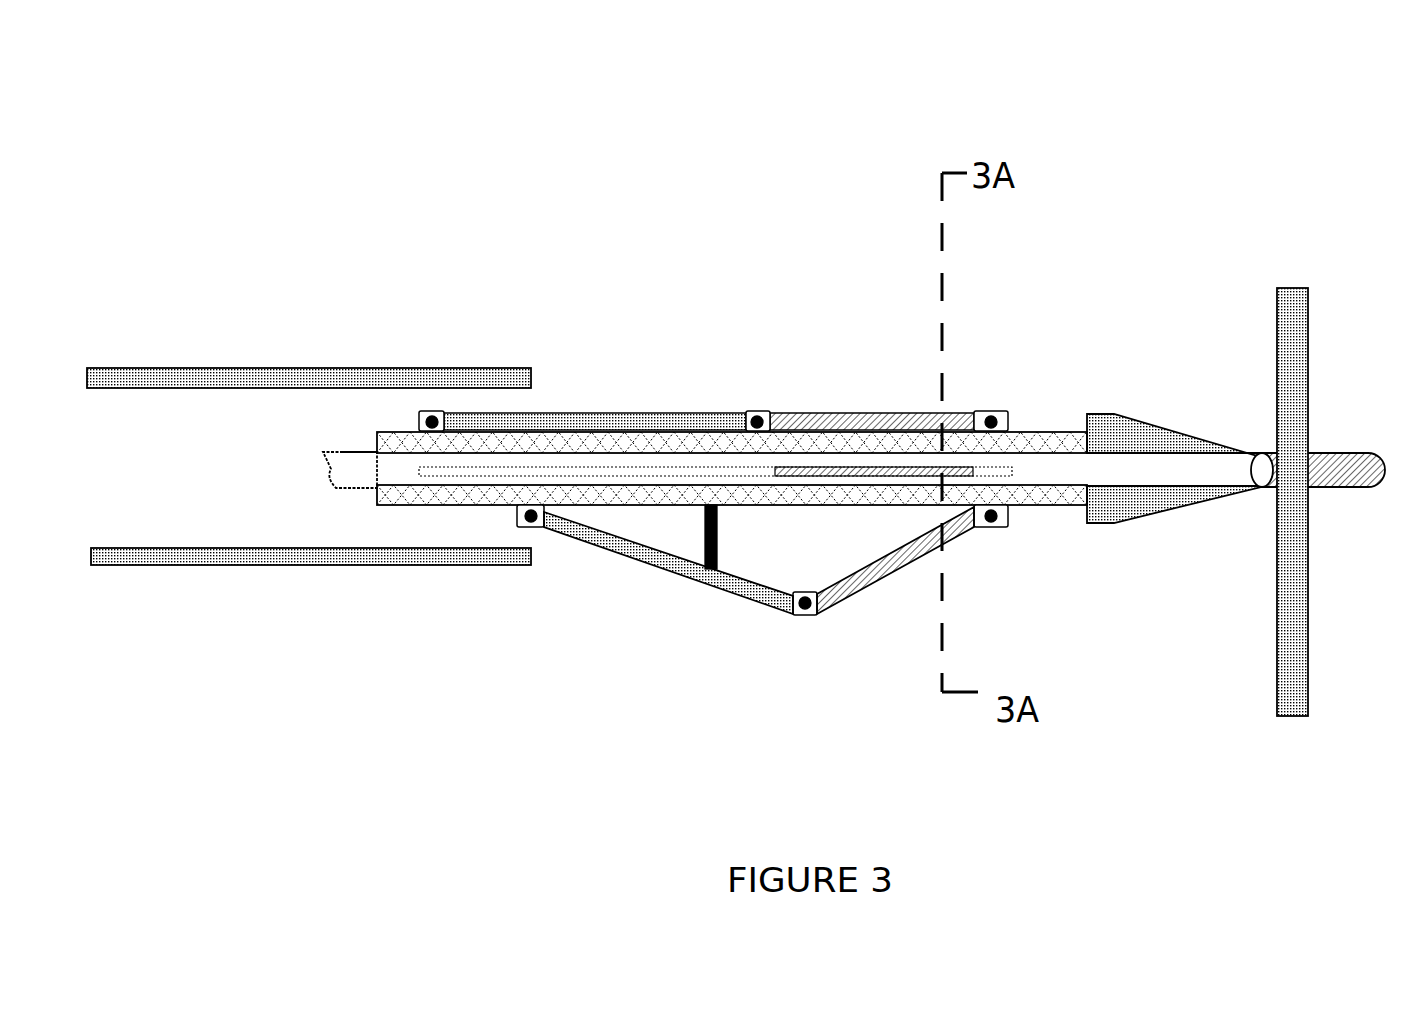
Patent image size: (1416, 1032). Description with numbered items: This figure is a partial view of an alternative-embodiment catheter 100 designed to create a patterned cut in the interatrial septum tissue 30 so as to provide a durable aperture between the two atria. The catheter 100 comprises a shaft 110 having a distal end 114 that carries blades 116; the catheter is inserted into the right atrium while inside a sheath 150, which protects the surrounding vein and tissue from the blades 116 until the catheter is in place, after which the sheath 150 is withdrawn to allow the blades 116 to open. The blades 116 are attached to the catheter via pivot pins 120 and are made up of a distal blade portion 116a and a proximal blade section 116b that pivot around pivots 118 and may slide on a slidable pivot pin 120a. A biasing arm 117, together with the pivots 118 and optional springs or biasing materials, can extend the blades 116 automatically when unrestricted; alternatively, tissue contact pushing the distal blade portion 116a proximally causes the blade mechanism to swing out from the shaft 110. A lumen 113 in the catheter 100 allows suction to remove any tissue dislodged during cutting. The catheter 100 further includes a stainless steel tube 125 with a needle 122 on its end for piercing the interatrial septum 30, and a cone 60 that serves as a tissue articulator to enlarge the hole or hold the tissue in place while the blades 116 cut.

The catheter 100 is at (594, 291).
The sheath 150 is at (220, 377).
The lumen 113 is at (350, 465).
The stainless steel tube 125 is at (355, 453).
The shaft 110 is at (393, 443).
The blades 116 is at (858, 420).
The pivots 118 is at (757, 416).
The pivot pins 120 is at (993, 520).
The slidable pivot pin 120a is at (530, 517).
The blade section 116b is at (622, 547).
The distal blade portion 116a is at (870, 575).
The biasing arm 117 is at (703, 567).
The cone 60 is at (1119, 500).
The needle 122 is at (1364, 471).
The distal end 114 is at (1113, 323).
The tissue 30 is at (1301, 320).